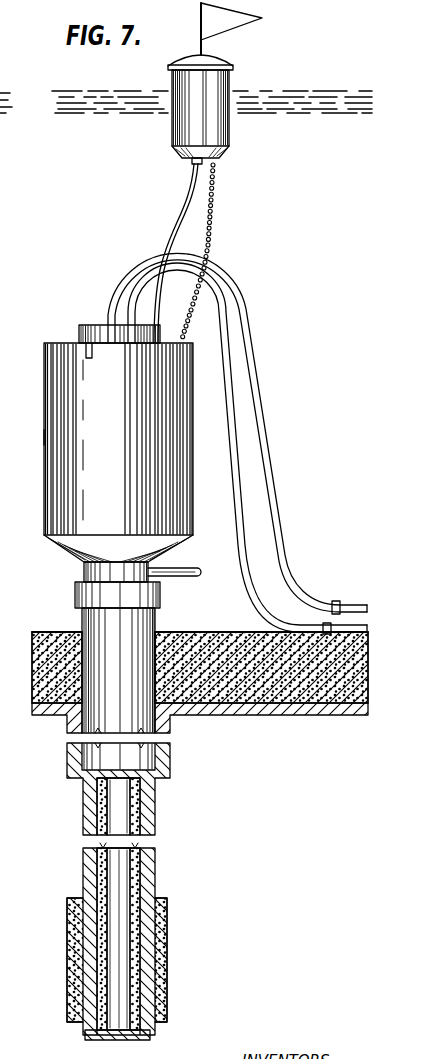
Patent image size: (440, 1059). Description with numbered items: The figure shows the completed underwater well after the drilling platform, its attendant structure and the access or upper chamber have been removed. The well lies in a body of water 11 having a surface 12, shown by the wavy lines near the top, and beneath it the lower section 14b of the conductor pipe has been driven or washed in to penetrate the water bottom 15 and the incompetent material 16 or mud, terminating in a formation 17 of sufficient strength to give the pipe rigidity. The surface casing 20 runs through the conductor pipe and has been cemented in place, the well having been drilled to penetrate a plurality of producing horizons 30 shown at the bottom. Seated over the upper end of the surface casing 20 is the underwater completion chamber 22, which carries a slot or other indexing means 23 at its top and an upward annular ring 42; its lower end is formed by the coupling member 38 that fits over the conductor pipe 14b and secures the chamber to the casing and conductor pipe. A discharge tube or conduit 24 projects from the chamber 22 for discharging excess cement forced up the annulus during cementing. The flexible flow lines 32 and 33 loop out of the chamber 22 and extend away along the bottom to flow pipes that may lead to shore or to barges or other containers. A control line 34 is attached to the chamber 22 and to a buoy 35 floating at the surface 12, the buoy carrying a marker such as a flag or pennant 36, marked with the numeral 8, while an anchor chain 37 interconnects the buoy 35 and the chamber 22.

The flag or pennant 36 is at (253, 17).
The flag marking 8 is at (221, 24).
The surface 12 is at (92, 96).
The buoy 35 is at (172, 80).
The control line 34 is at (188, 204).
The anchor chain 37 is at (214, 203).
The body of water 11 is at (296, 295).
The slot or indexing means 23 is at (85, 346).
The underwater completion chamber 22 is at (44, 388).
The upward annular ring 42 is at (22, 437).
The flow line 33 is at (277, 470).
The flow line 32 is at (238, 505).
The discharge tube or conduit 24 is at (189, 567).
The coupling member 38 is at (75, 590).
The water bottom 15 is at (51, 631).
The incompetent material 16 is at (45, 664).
The lower section of conductor pipe 14b is at (170, 752).
The formation 17 is at (196, 822).
The surface casing 20 is at (125, 876).
The producing horizons 30 is at (150, 962).